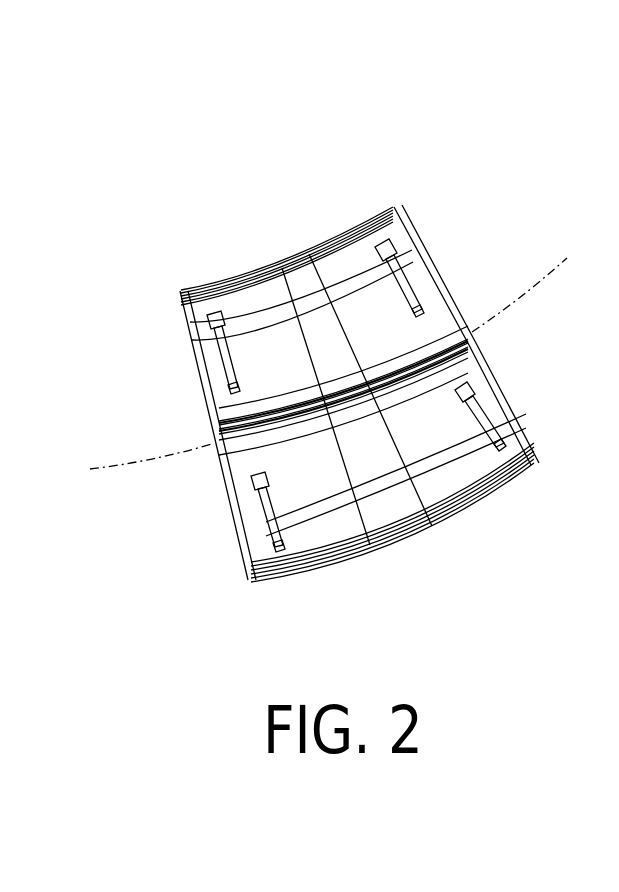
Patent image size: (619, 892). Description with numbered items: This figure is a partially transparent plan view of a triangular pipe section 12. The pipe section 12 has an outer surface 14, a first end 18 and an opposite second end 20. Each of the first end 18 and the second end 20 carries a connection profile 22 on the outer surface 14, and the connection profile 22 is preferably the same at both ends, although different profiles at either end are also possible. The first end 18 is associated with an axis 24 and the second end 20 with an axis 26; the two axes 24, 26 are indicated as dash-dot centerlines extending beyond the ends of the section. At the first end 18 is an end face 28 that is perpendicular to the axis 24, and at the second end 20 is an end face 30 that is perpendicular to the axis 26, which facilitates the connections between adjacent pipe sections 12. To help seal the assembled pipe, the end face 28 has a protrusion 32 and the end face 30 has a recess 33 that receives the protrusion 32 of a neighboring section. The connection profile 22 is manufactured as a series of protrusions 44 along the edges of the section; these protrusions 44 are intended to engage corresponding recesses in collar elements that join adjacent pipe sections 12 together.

The pipe section 12 is at (417, 520).
The outer surface 14 is at (345, 245).
The first end 18 is at (222, 290).
The second end 20 is at (481, 470).
The connection profile 22 is at (422, 262).
The axis 24 is at (203, 447).
The axis 26 is at (527, 288).
The end face 28 is at (226, 504).
The end face 30 is at (437, 293).
The protrusion 32 is at (190, 390).
The recess 33 is at (480, 364).
The protrusions 44 is at (396, 209).